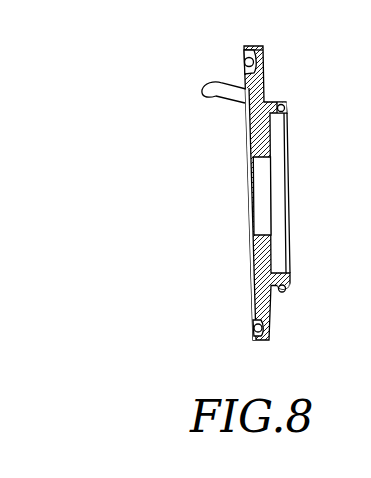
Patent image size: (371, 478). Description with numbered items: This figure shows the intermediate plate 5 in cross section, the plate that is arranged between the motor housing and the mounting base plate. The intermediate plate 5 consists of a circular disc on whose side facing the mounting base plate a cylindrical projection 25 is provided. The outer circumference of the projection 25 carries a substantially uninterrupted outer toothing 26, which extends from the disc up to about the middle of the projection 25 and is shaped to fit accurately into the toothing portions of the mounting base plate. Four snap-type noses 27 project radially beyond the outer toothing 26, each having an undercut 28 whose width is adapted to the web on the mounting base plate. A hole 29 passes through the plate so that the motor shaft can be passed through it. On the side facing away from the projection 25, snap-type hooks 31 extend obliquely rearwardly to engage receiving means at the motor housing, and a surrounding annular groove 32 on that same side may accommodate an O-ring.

The intermediate plate 5 is at (222, 211).
The cylindrical projection 25 is at (286, 110).
The outer toothing 26 is at (276, 102).
The snap-type nose 27 is at (286, 289).
The undercut 28 is at (275, 292).
The hole 29 is at (256, 188).
The snap-type hook 31 is at (207, 98).
The annular groove 32 is at (243, 62).